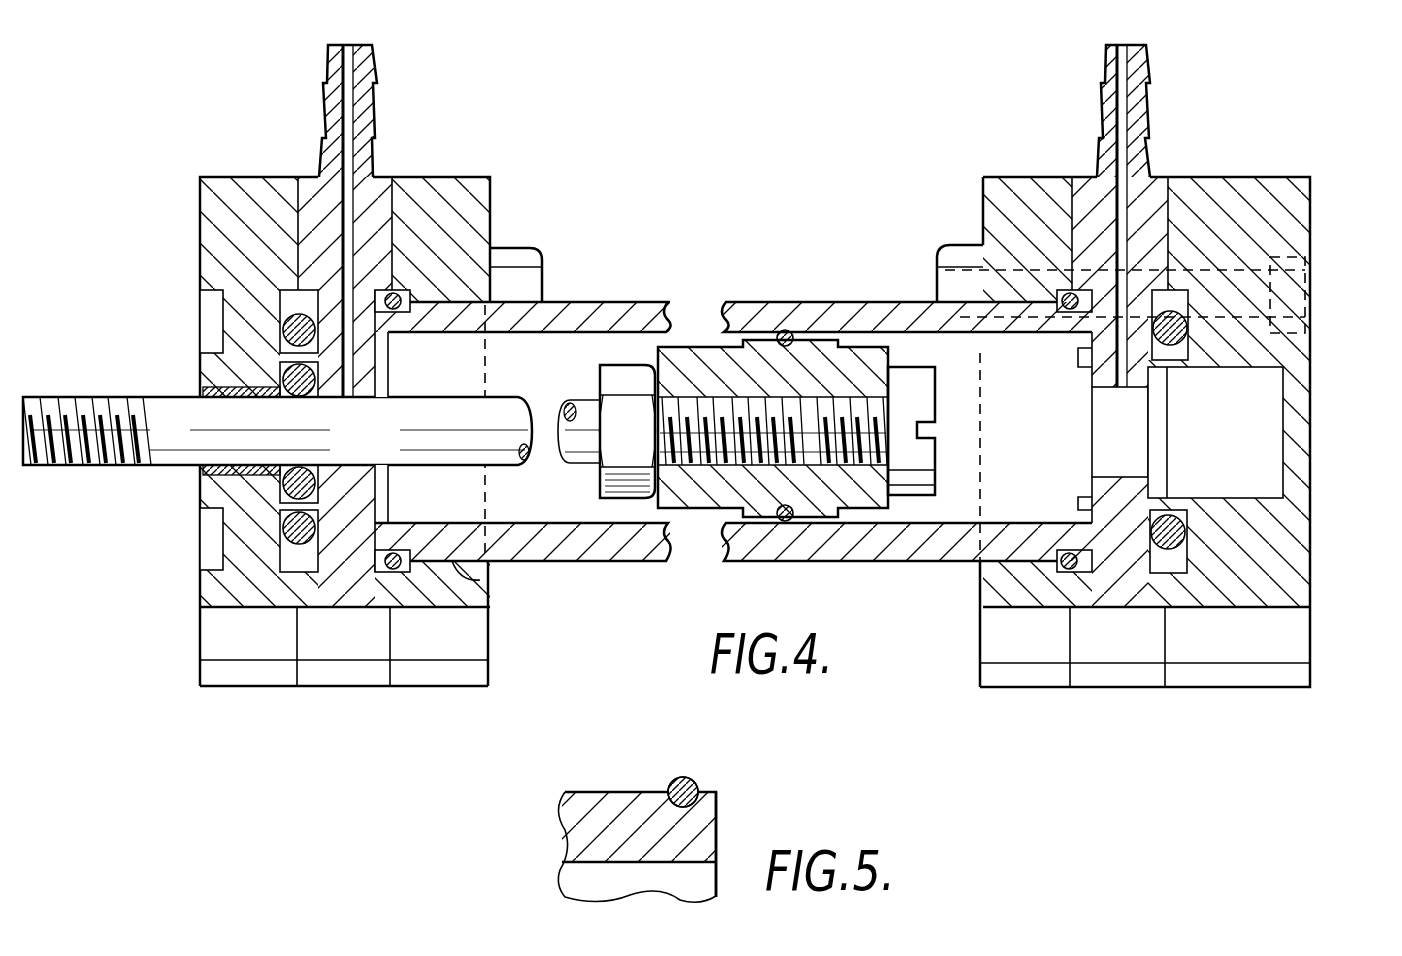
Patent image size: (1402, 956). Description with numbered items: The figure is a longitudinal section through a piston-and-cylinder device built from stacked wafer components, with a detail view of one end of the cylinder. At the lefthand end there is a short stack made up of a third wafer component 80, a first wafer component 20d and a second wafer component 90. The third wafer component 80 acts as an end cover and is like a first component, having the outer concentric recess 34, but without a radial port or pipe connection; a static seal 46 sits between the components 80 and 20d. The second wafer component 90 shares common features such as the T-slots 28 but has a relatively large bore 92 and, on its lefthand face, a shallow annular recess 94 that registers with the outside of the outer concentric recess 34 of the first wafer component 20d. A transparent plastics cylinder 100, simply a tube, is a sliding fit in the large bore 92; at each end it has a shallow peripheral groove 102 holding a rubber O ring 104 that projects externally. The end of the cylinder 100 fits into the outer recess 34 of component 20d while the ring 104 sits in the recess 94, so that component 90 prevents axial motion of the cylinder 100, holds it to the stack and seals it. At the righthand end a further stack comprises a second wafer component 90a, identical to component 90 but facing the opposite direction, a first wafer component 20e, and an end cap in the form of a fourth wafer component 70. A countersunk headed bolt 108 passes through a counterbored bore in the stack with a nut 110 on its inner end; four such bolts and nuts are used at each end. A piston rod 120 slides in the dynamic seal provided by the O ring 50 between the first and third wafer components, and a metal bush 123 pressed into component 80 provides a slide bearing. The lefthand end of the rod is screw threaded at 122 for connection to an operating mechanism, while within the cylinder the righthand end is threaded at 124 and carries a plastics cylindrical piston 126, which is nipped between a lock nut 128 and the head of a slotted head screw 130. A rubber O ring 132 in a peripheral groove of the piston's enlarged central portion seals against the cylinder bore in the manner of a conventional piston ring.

In FIG. 4, the first wafer component 20d is at (373, 175).
In FIG. 4, the first wafer component 20e is at (1133, 162).
In FIG. 4, the T-slots 28 is at (338, 672).
In FIG. 4, the outer concentric recess 34 is at (205, 322).
In FIG. 4, the static seal 46 is at (317, 537).
In FIG. 4, the O ring 50 is at (298, 473).
In FIG. 4, the fourth wafer component 70 is at (1282, 193).
In FIG. 4, the third wafer component 80 is at (233, 177).
In FIG. 4, the second wafer component 90 is at (492, 207).
In FIG. 4, the second wafer component 90a is at (988, 213).
In FIG. 4, the large bore 92 is at (480, 580).
In FIG. 4, the annular recess 94 is at (398, 572).
In FIG. 4, the cylinder 100 is at (615, 305).
In FIG. 5, the cylinder 100 is at (572, 840).
In FIG. 5, the peripheral groove 102 is at (688, 815).
In FIG. 4, the O ring 104 is at (400, 308).
In FIG. 5, the O ring 104 is at (695, 780).
In FIG. 4, the countersunk headed bolt 108 is at (1313, 316).
In FIG. 4, the nut 110 is at (953, 290).
In FIG. 4, the piston rod 120 is at (165, 455).
In FIG. 4, the screw thread 122 is at (55, 467).
In FIG. 4, the metal bush 123 is at (200, 385).
In FIG. 4, the screw thread 124 is at (702, 393).
In FIG. 4, the piston 126 is at (830, 345).
In FIG. 4, the lock nut 128 is at (627, 487).
In FIG. 4, the slotted head screw 130 is at (917, 403).
In FIG. 4, the O ring 132 is at (779, 520).